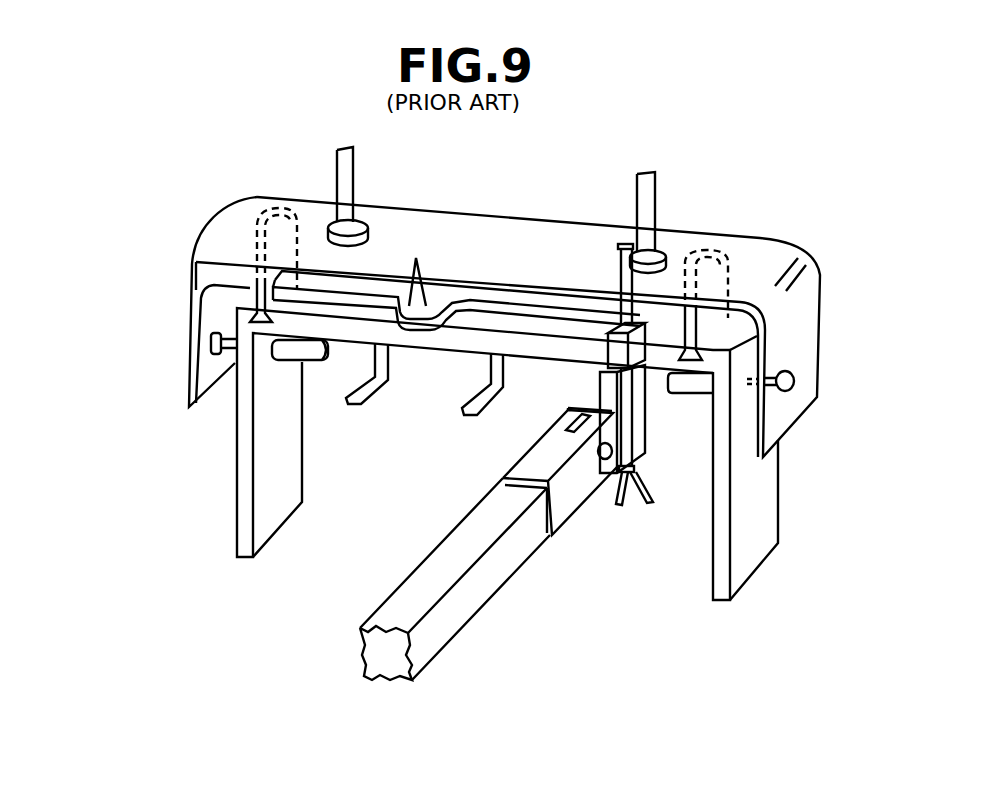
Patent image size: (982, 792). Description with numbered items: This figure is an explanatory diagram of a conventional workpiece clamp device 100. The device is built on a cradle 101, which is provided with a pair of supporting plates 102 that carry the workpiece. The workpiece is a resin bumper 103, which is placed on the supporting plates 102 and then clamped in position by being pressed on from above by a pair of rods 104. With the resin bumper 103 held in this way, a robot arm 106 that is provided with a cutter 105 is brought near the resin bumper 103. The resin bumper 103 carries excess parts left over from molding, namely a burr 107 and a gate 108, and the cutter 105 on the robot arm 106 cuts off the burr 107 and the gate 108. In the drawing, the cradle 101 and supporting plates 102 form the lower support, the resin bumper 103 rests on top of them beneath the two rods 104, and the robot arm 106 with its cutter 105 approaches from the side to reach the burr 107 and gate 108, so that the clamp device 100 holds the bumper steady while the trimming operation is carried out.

The workpiece clamp device 100 is at (175, 560).
The cradle 101 is at (237, 472).
The supporting plates 102 is at (252, 292).
The resin bumper 103 is at (482, 238).
The rods 104 is at (336, 168).
The cutter 105 is at (616, 249).
The robot arm 106 is at (535, 445).
The burr 107 is at (540, 300).
The gate 108 is at (416, 258).